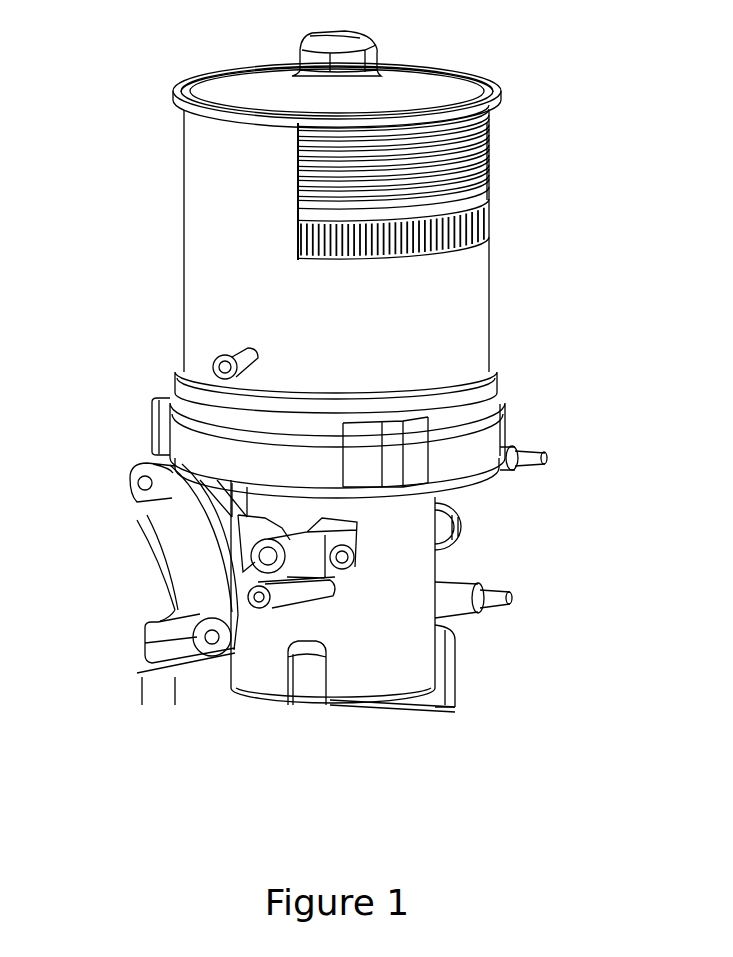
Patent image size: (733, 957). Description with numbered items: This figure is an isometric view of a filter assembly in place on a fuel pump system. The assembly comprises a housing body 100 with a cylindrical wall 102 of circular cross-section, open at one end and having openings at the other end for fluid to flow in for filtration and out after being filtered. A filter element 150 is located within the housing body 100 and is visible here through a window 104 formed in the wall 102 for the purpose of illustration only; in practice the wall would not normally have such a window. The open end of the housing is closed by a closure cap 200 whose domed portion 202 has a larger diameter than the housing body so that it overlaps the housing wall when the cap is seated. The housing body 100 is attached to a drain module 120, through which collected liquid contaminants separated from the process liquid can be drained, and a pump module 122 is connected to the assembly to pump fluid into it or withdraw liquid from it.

The housing body 100 is at (470, 330).
The cylindrical wall 102 is at (490, 195).
The window 104 is at (297, 237).
The drain module 120 is at (364, 688).
The pump module 122 is at (177, 538).
The filter element 150 is at (455, 228).
The closure cap 200 is at (408, 78).
The domed portion 202 is at (243, 80).